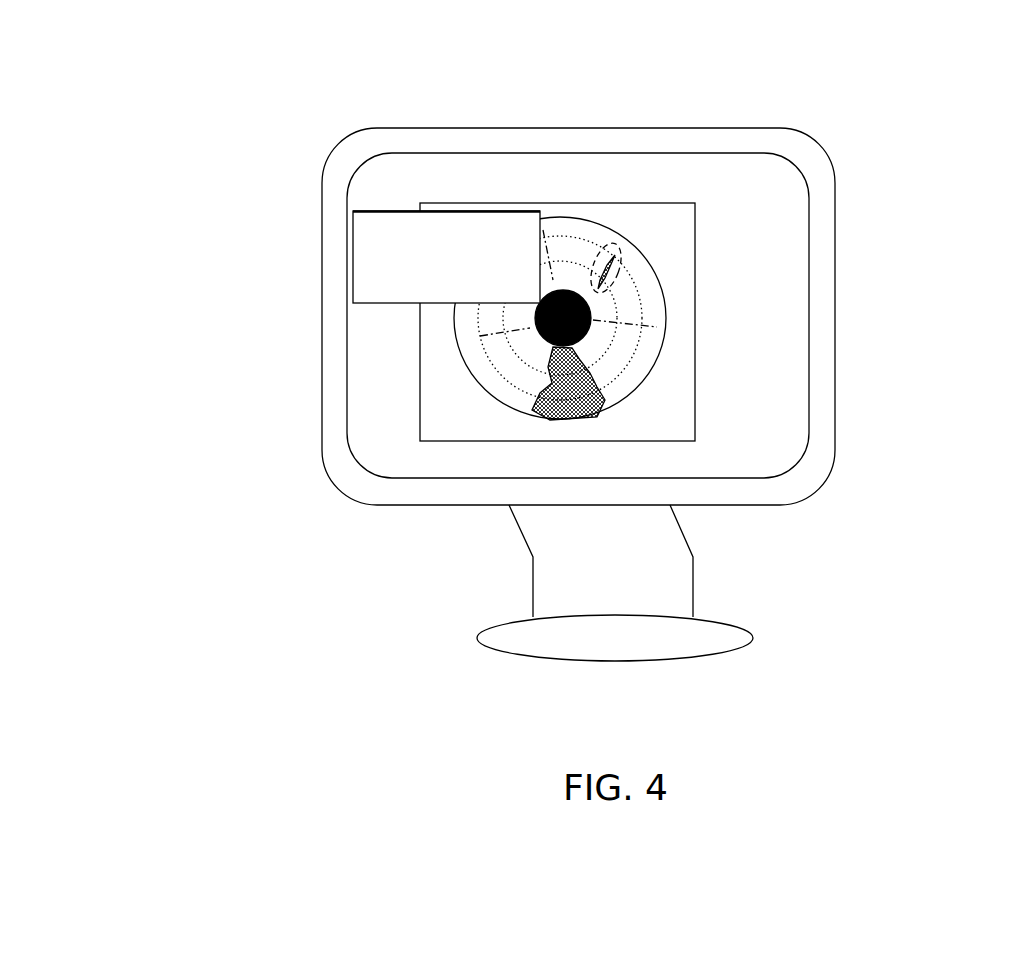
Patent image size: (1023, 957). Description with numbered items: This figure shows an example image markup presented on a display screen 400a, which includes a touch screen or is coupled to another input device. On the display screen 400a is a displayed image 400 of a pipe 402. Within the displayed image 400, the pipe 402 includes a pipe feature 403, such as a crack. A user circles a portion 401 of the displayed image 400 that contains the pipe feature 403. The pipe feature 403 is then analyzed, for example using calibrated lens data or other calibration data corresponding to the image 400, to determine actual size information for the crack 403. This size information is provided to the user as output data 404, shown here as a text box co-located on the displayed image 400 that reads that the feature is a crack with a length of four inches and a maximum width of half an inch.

The displayed image 400 is at (578, 230).
The display screen 400a is at (507, 394).
The portion 401 is at (784, 206).
The pipe 402 is at (724, 365).
The pipe feature 403 is at (775, 318).
The output data 404 is at (377, 251).